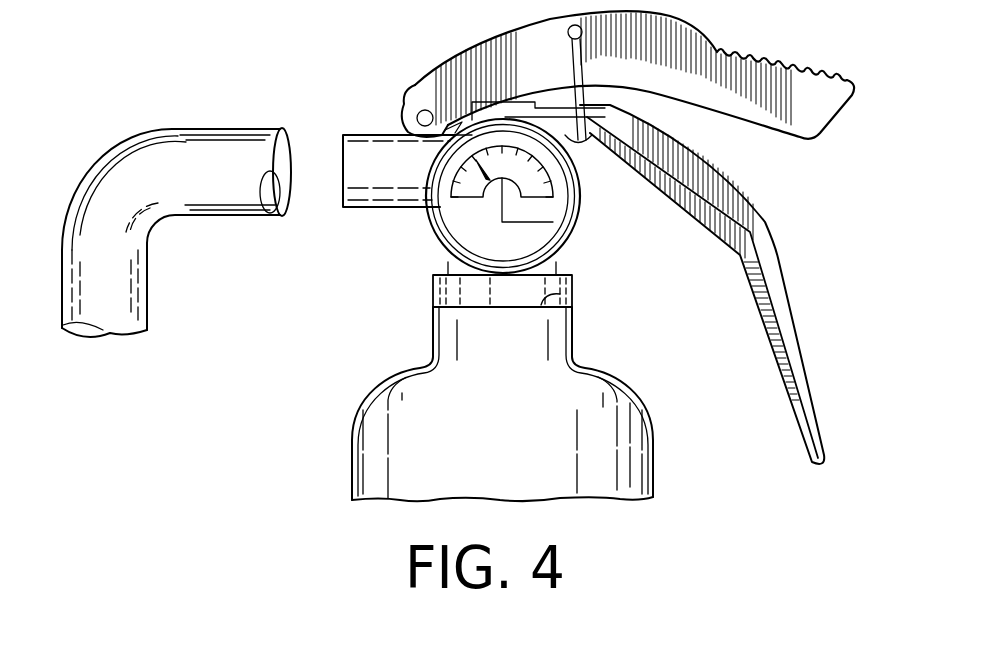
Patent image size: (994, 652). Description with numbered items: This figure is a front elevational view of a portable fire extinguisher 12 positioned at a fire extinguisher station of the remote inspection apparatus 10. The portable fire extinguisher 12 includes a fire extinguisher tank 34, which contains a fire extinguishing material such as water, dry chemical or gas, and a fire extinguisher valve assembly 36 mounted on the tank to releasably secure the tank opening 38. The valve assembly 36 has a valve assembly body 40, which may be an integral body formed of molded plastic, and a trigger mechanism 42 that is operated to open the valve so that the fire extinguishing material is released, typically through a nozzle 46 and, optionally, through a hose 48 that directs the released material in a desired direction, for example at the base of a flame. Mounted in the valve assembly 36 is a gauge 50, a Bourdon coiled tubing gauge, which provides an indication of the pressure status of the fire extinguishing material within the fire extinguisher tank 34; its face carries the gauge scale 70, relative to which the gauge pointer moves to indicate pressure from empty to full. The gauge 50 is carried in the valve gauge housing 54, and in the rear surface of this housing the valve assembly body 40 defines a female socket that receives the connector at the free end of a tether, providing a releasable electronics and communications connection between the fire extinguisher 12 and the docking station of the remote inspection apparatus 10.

The remote inspection apparatus 10 is at (495, 256).
The portable fire extinguisher 12 is at (492, 369).
The fire extinguisher tank 34 is at (633, 388).
The fire extinguisher valve assembly 36 is at (479, 222).
The tank opening 38 is at (577, 300).
The valve assembly body 40 is at (577, 280).
The trigger mechanism 42 is at (561, 65).
The nozzle 46 is at (372, 157).
The hose 48 is at (200, 183).
The gauge 50 is at (564, 197).
The valve gauge housing 54 is at (430, 226).
The gauge scale 70 is at (553, 182).